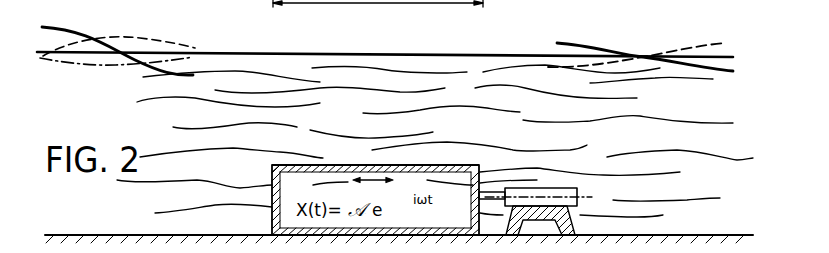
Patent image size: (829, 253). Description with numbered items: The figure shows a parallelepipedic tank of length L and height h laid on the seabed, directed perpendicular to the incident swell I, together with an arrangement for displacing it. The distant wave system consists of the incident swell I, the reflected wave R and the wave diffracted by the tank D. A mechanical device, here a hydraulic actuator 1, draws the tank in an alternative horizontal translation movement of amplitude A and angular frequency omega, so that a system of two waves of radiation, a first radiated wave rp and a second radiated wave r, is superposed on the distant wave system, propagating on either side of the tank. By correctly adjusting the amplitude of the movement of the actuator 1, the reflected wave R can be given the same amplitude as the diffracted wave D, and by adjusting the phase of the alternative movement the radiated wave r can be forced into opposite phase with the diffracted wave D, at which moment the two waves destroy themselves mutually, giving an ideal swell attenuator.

The hydraulic actuator 1 is at (553, 197).
The incident swell I is at (82, 16).
The reflected wave R is at (190, 20).
The wave of radiation rp is at (118, 77).
The wave diffracted by the tank D is at (598, 32).
The wave of radiation r is at (725, 32).